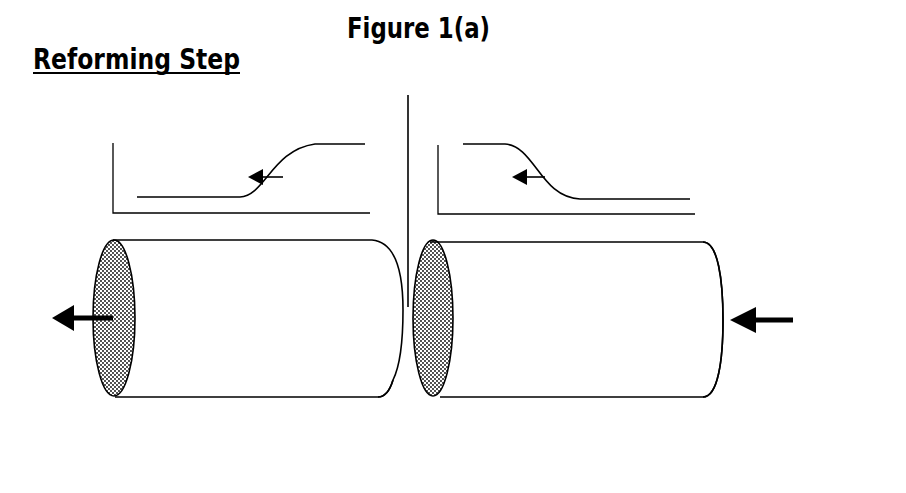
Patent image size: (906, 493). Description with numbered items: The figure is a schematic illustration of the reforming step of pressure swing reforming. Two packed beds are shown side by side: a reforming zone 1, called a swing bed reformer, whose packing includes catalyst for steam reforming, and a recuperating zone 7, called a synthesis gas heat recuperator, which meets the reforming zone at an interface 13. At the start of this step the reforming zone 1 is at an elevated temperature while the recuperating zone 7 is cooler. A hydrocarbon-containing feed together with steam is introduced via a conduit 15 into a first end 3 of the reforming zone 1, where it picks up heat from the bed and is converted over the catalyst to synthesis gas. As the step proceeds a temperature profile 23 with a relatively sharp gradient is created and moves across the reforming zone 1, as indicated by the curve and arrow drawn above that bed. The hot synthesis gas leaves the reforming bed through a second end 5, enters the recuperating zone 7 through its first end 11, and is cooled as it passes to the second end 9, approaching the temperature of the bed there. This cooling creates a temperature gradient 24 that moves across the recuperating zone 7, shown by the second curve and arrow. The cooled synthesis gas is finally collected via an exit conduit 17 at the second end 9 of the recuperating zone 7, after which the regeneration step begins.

The reforming zone 1 is at (593, 348).
The first end of the reforming zone 3 is at (718, 373).
The second end of the reforming zone 5 is at (427, 398).
The recuperating zone 7 is at (240, 360).
The second end of the recuperating zone 9 is at (108, 392).
The first end of the recuperating zone 11 is at (397, 378).
The interface 13 is at (408, 186).
The conduit 15 is at (762, 317).
The exit conduit 17 is at (85, 322).
The temperature profile 23 is at (541, 166).
The temperature gradient 24 is at (285, 160).